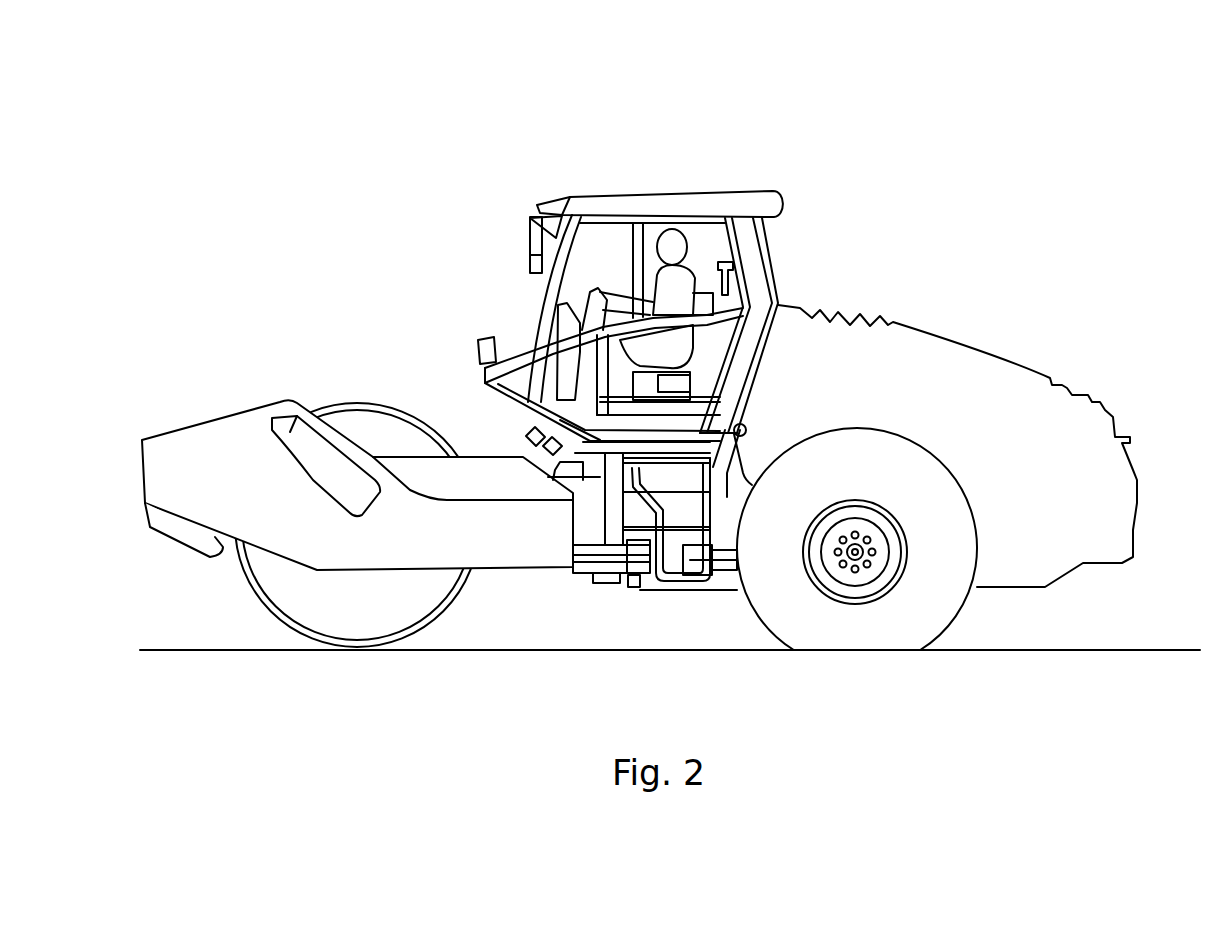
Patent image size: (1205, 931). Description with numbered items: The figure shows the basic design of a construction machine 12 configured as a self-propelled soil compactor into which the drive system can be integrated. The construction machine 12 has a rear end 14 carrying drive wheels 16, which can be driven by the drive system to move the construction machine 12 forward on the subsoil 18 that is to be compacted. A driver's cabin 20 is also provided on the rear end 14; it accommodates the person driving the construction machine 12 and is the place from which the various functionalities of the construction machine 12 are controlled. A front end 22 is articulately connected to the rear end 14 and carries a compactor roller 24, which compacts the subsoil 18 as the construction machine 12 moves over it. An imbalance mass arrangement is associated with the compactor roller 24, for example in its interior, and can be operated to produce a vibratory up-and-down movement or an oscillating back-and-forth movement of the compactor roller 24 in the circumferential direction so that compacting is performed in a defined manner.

The construction machine 12 is at (882, 175).
The rear end 14 is at (977, 313).
The drive wheels 16 is at (948, 605).
The subsoil 18 is at (170, 650).
The driver's cabin 20 is at (647, 198).
The front end 22 is at (178, 383).
The compactor roller 24 is at (322, 400).